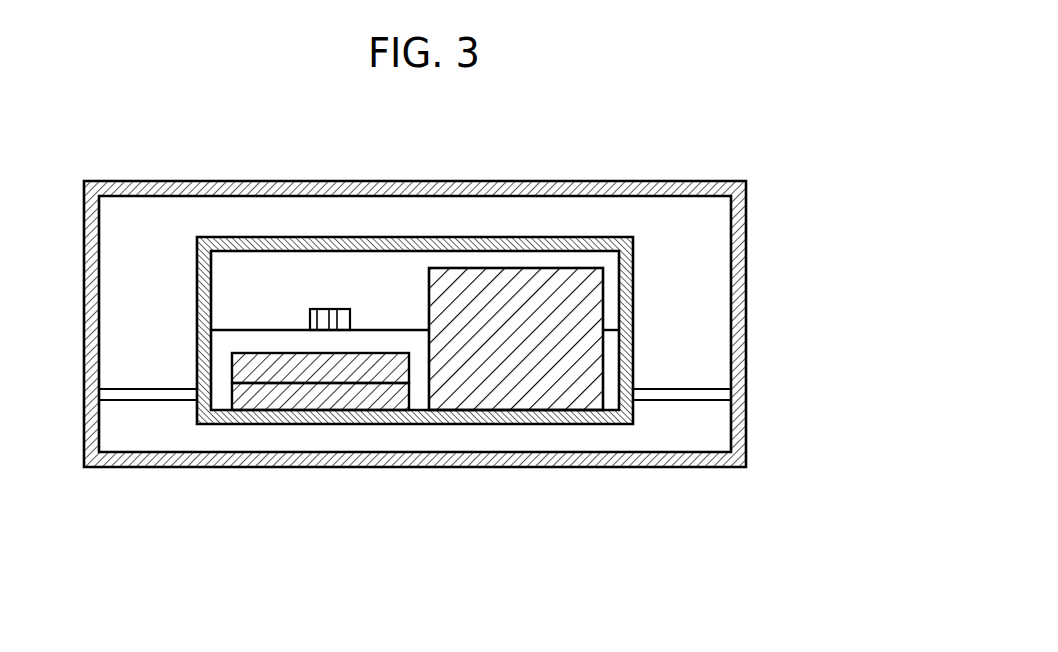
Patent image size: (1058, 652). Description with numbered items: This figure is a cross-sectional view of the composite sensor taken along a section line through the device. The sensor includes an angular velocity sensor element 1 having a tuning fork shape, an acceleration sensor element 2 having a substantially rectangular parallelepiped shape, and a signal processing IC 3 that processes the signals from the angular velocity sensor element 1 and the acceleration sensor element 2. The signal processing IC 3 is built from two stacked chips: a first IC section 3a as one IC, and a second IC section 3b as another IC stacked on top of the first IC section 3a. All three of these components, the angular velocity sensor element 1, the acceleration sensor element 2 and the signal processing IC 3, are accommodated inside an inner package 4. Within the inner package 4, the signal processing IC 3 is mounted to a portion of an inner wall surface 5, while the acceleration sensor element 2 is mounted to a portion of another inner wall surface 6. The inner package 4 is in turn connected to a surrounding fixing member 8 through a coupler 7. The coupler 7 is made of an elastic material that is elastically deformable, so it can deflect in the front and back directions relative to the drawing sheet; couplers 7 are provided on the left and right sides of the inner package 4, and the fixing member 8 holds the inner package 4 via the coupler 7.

The angular velocity sensor element 1 is at (343, 312).
The acceleration sensor element 2 is at (500, 290).
The signal processing IC 3 is at (327, 477).
The first IC section 3a is at (365, 398).
The second IC section 3b is at (285, 368).
The inner package 4 is at (218, 237).
The inner wall surface 5 is at (585, 405).
The inner wall surface 6 is at (260, 330).
The coupler 7 is at (718, 393).
The fixing member 8 is at (746, 245).